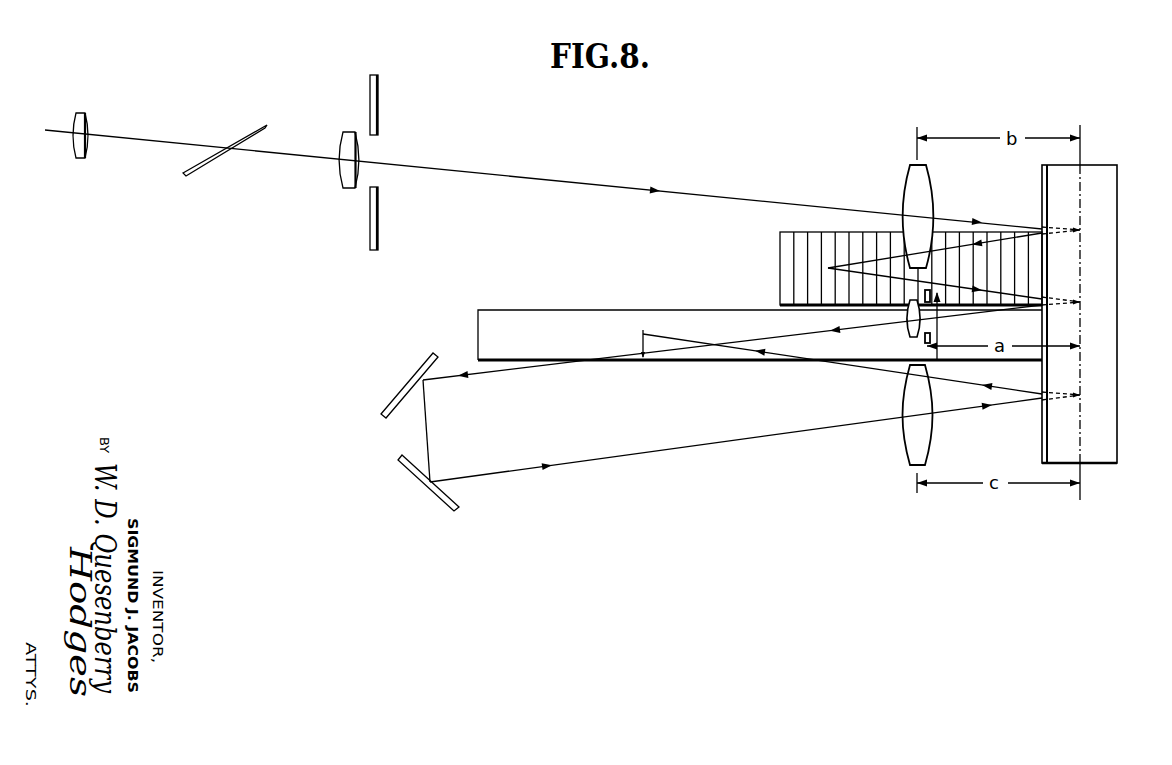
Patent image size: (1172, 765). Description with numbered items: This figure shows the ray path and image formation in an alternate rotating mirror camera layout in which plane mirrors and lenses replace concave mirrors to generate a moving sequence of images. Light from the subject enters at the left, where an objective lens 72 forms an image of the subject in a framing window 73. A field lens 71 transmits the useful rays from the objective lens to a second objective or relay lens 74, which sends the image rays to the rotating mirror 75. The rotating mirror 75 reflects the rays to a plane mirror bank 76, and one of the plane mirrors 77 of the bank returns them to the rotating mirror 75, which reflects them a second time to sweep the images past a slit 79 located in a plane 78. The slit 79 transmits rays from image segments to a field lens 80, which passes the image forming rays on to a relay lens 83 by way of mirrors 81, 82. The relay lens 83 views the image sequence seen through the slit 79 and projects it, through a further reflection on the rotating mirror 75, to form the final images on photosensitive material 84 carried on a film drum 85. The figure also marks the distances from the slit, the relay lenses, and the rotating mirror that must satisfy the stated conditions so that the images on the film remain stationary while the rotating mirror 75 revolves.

The field lens 71 is at (342, 146).
The objective lens 72 is at (86, 126).
The framing window 73 is at (378, 134).
The relay lens 74 is at (906, 194).
The rotating mirror 75 is at (1117, 232).
The plane mirror bank 76 is at (781, 274).
The plane mirror 77 is at (840, 232).
The plane 78 is at (938, 318).
The slit 79 is at (927, 340).
The field lens 80 is at (909, 320).
The mirror 81 is at (402, 399).
The mirror 82 is at (423, 480).
The relay lens 83 is at (926, 438).
The photosensitive material 84 is at (644, 322).
The film drum 85 is at (595, 318).